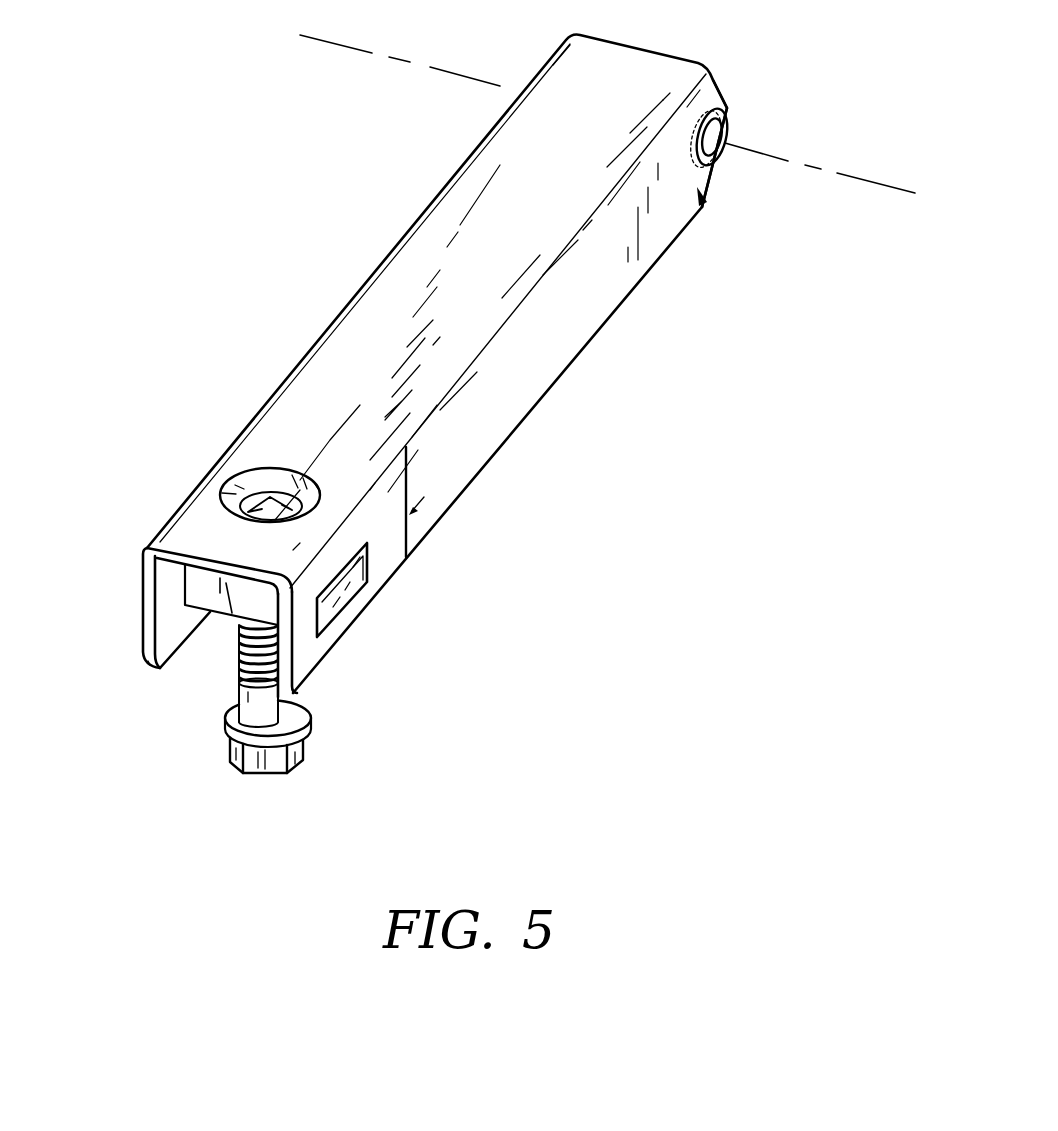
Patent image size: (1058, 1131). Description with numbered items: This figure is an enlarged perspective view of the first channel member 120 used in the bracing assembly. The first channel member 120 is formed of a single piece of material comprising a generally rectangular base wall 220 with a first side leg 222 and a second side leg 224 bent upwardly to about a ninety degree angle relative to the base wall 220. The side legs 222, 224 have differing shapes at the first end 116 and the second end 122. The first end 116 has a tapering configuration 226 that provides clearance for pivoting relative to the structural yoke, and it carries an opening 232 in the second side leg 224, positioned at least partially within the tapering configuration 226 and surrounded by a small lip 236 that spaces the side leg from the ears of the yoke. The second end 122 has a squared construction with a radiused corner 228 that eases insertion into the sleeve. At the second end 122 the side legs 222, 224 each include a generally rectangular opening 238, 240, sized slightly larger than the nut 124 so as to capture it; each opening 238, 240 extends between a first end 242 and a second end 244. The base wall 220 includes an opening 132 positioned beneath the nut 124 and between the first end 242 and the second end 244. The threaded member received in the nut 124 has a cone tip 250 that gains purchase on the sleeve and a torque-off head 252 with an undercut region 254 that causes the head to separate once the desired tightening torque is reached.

The first channel member 120 is at (275, 198).
The base wall 220 is at (525, 158).
The nut 124 is at (343, 612).
The second end 244 is at (312, 637).
The tapering configuration 226 is at (722, 100).
The small lip 236 is at (712, 110).
The opening 232 is at (723, 140).
The first end 116 is at (703, 207).
The second end 122 is at (197, 540).
The first side leg 222 is at (143, 592).
The second side leg 224 is at (302, 665).
The radiused corner 228 is at (147, 663).
The opening 238 is at (185, 587).
The opening 132 is at (257, 478).
The cone tip 250 is at (287, 495).
The first end 242 is at (367, 558).
The opening 240 is at (358, 593).
The undercut region 254 is at (252, 688).
The torque-off head 252 is at (268, 768).